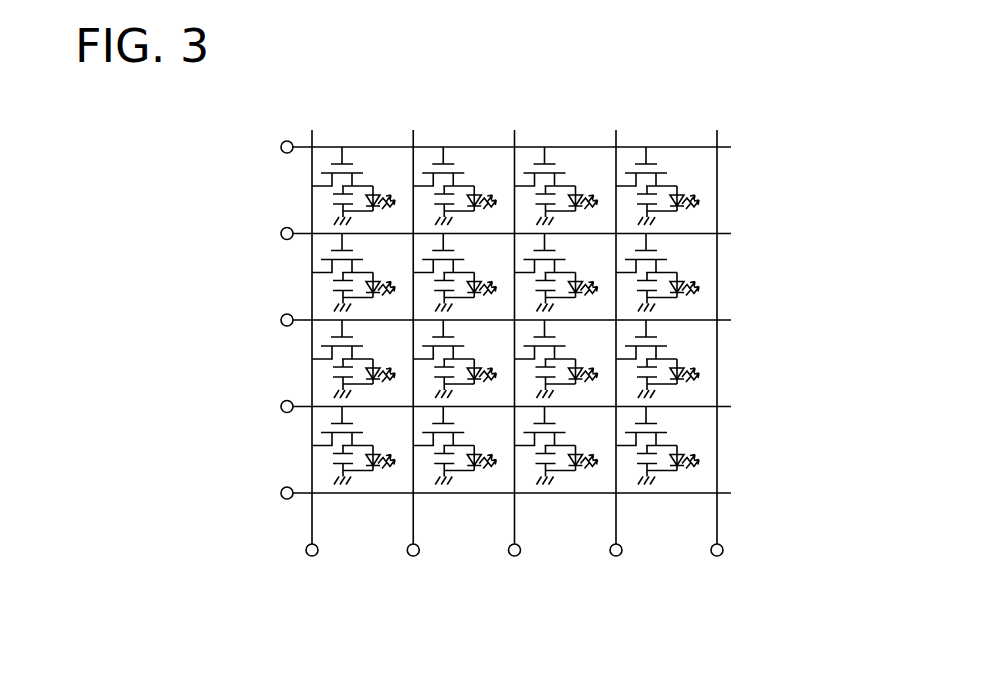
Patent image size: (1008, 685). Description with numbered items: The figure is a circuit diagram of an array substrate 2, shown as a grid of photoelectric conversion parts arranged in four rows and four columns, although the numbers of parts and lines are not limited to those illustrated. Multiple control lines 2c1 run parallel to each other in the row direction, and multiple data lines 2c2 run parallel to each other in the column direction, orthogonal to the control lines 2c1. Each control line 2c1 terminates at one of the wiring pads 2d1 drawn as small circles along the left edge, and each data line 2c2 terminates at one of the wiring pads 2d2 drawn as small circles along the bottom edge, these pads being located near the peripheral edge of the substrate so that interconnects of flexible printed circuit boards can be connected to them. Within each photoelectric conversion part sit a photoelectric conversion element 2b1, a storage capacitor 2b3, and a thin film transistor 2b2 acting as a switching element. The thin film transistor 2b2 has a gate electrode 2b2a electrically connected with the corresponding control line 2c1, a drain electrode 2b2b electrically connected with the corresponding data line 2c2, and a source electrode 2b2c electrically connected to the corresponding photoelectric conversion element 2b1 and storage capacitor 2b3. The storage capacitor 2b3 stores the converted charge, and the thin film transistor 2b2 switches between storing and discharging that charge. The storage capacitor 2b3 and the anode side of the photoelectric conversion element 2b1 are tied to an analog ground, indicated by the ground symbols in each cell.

The array substrate 2 is at (788, 104).
The photoelectric conversion element 2b1 is at (691, 184).
The thin film transistor 2b2 is at (668, 159).
The gate electrode 2b2a is at (355, 153).
The drain electrode 2b2b is at (313, 181).
The source electrode 2b2c is at (375, 175).
The storage capacitor 2b3 is at (629, 190).
The control line 2c1 is at (363, 493).
The data line 2c2 is at (617, 477).
The wiring pad 2d1 is at (278, 497).
The wiring pad 2d2 is at (610, 548).